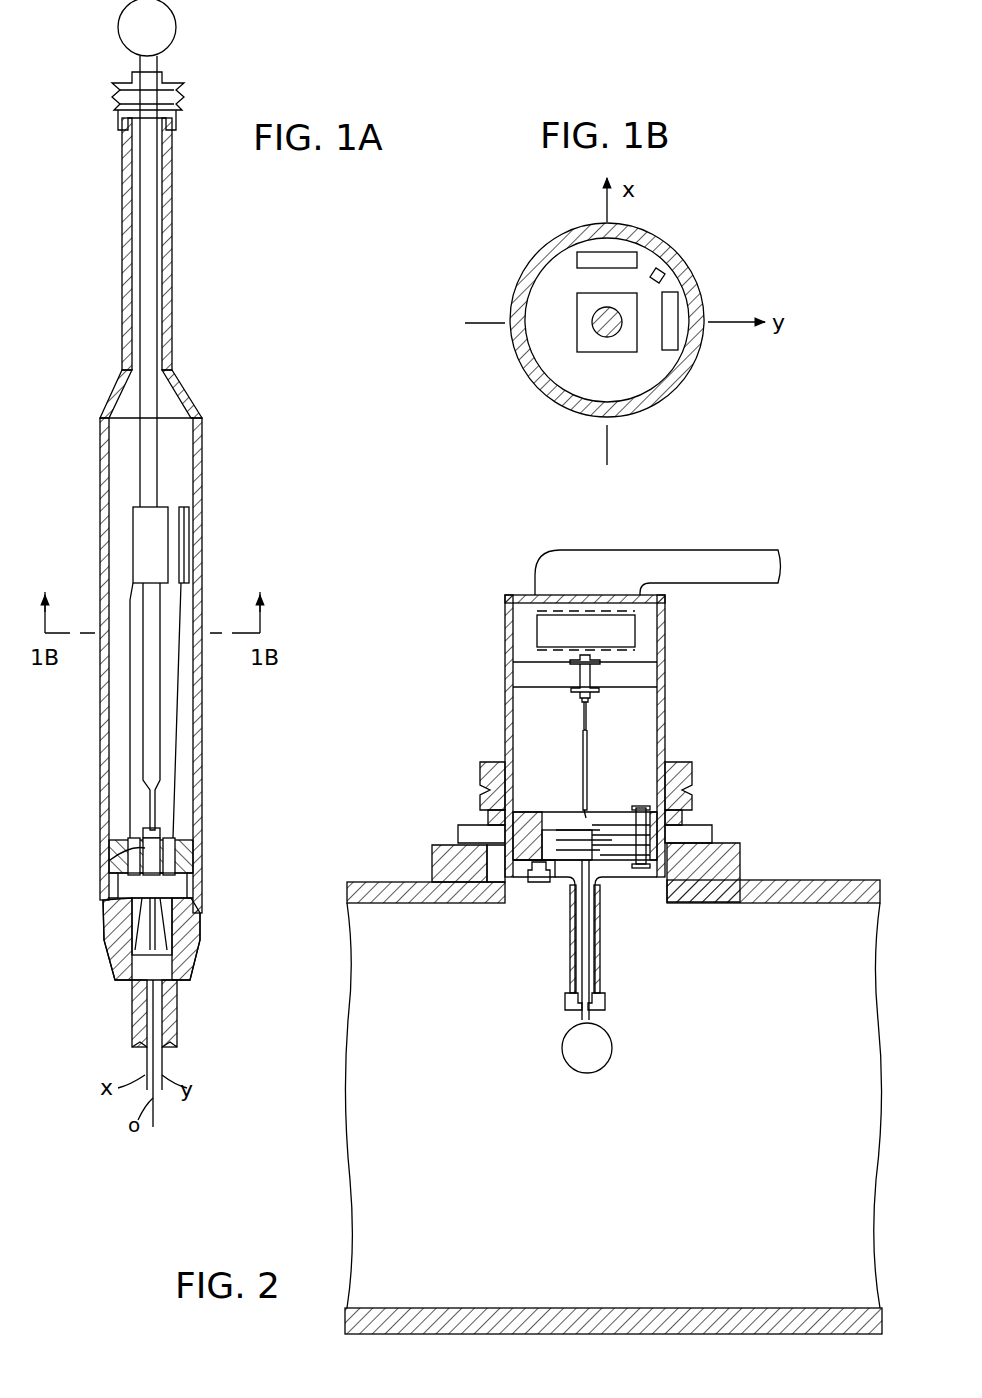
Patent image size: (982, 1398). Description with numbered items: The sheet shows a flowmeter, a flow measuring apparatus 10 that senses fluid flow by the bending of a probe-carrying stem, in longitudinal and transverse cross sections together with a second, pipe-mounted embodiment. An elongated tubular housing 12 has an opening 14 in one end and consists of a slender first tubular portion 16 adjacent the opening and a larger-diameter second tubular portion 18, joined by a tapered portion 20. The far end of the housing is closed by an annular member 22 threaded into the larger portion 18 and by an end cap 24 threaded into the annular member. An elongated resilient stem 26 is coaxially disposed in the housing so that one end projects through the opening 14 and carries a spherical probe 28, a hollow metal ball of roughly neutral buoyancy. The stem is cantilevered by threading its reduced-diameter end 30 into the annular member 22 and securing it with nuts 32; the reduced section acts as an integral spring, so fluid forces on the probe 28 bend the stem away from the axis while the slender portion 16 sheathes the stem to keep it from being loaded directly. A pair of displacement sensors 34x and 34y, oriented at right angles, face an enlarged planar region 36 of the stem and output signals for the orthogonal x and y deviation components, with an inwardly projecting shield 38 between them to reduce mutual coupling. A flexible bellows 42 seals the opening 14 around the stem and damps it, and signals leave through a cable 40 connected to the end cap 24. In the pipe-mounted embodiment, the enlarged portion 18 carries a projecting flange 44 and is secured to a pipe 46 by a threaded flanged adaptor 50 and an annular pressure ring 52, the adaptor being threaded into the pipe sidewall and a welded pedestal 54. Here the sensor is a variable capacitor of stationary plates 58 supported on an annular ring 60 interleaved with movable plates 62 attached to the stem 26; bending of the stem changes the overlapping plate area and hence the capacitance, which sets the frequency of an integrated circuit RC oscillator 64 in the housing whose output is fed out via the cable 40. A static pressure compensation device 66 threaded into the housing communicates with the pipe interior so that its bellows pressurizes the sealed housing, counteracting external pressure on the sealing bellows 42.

In FIG. 1A, the flow measuring apparatus 10 is at (80, 910).
In FIG. 1A, the tubular housing 12 is at (98, 456).
In FIG. 1B, the tubular housing 12 is at (518, 370).
In FIG. 1A, the opening 14 is at (165, 110).
In FIG. 1A, the first tubular portion 16 is at (127, 185).
In FIG. 2, the first tubular portion 16 is at (568, 958).
In FIG. 1A, the second tubular portion 18 is at (198, 722).
In FIG. 1B, the second tubular portion 18 is at (575, 236).
In FIG. 2, the second tubular portion 18 is at (505, 612).
In FIG. 1A, the tapered portion 20 is at (120, 392).
In FIG. 1A, the annular member 22 is at (196, 886).
In FIG. 1A, the end cap 24 is at (195, 945).
In FIG. 1A, the stem 26 is at (160, 245).
In FIG. 1B, the stem 26 is at (601, 330).
In FIG. 1A, the probe 28 is at (176, 22).
In FIG. 2, the probe 28 is at (603, 1068).
In FIG. 1A, the stem end 30 is at (155, 812).
In FIG. 1A, the nuts 32 is at (112, 855).
In FIG. 1B, the sensor 34x is at (630, 260).
In FIG. 1A, the sensor 34y is at (182, 562).
In FIG. 1B, the sensor 34y is at (667, 350).
In FIG. 1A, the enlarged region of stem 36 is at (140, 546).
In FIG. 1B, the enlarged region of stem 36 is at (587, 296).
In FIG. 1B, the shield 38 is at (668, 270).
In FIG. 1A, the cable 40 is at (178, 1012).
In FIG. 2, the cable 40 is at (750, 583).
In FIG. 1A, the bellows 42 is at (160, 98).
In FIG. 2, the bellows 42 is at (605, 1000).
In FIG. 2, the flange 44 is at (680, 762).
In FIG. 2, the pipe 46 is at (825, 890).
In FIG. 2, the flanged adaptor 50 is at (475, 825).
In FIG. 2, the annular pressure ring 52 is at (497, 762).
In FIG. 2, the pedestal 54 is at (445, 845).
In FIG. 2, the stationary plates 58 is at (608, 830).
In FIG. 2, the annular ring 60 is at (655, 818).
In FIG. 2, the movable plates 62 is at (565, 830).
In FIG. 2, the RC oscillator 64 is at (628, 634).
In FIG. 2, the static pressure compensation device 66 is at (540, 884).